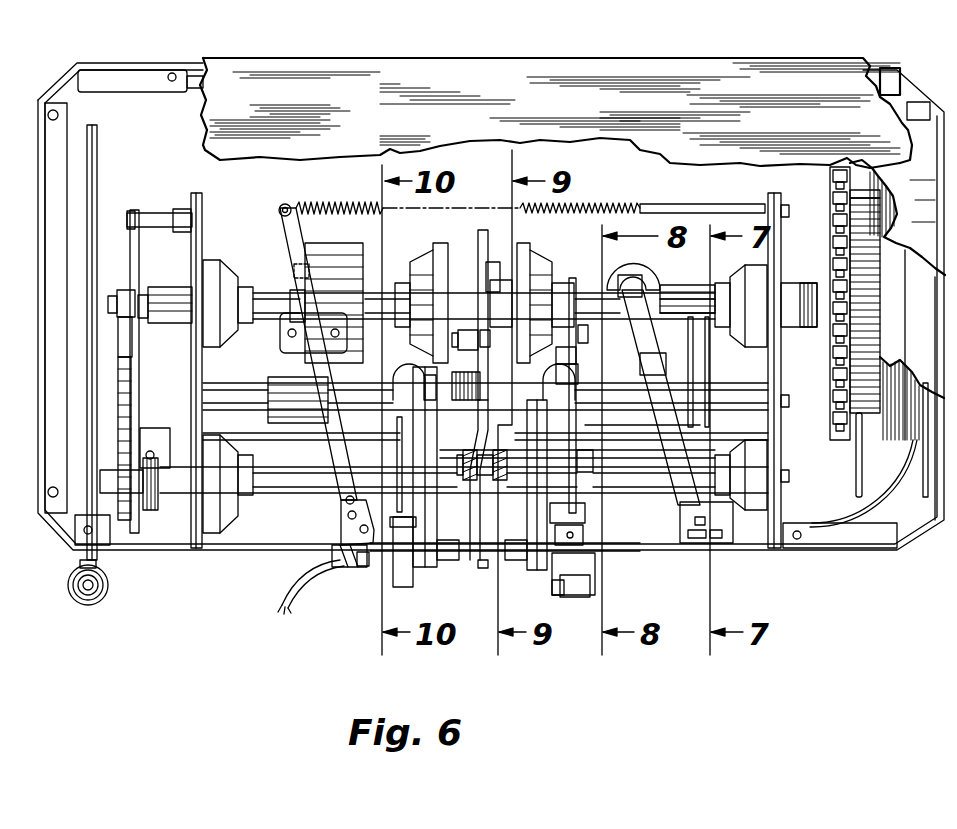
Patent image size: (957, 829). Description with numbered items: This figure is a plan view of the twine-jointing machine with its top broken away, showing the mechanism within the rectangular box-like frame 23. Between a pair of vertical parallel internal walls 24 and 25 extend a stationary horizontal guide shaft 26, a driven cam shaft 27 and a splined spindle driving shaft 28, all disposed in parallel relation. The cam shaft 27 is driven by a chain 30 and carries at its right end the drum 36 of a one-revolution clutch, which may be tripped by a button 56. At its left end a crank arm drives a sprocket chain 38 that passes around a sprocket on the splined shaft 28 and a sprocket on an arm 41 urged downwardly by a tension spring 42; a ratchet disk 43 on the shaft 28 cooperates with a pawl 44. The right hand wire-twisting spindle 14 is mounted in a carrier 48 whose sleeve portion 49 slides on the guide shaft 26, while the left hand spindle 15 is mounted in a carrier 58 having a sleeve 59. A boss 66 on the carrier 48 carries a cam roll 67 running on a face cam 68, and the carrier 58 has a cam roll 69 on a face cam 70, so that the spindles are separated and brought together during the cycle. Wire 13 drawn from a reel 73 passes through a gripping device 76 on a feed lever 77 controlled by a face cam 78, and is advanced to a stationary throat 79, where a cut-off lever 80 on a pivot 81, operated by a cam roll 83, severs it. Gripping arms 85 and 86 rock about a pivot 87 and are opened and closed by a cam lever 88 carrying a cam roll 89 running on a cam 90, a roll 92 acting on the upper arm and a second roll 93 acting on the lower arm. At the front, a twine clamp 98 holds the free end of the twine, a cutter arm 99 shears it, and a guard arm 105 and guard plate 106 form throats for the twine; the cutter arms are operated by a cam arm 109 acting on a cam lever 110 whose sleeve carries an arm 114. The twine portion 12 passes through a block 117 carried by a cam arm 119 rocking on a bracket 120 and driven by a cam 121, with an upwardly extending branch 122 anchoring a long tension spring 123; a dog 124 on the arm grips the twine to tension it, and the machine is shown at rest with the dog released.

The portion of the twine 12 is at (278, 598).
The wire 13 is at (872, 516).
The right hand wire-twisting spindle 14 is at (513, 565).
The left hand wire-twisting spindle 15 is at (452, 542).
The frame 23 is at (62, 545).
The internal wall 24 is at (781, 237).
The internal wall 25 is at (203, 197).
The guide shaft 26 is at (232, 393).
The cam shaft 27 is at (268, 294).
The splined spindle driving shaft 28 is at (285, 478).
The chain 30 is at (843, 441).
The drum 36 is at (876, 298).
The sprocket chain 38 is at (132, 390).
The arm 41 is at (140, 268).
The tension spring 42 is at (132, 350).
The ratchet disk 43 is at (150, 512).
The pawl 44 is at (155, 430).
The carrier 48 is at (538, 572).
The sleeve portion 49 is at (625, 430).
The button 56 is at (108, 585).
The carrier 58 is at (428, 570).
The sleeve 59 is at (305, 423).
The boss 66 is at (578, 375).
The cam roll 67 is at (576, 357).
The face cam 68 is at (526, 265).
The cam roll 69 is at (410, 352).
The face cam 70 is at (437, 268).
The reel 73 is at (862, 485).
The gripping device 76 is at (682, 528).
The feed lever 77 is at (672, 448).
The face cam 78 is at (652, 263).
The stationary throat 79 is at (586, 535).
The cut-off lever 80 is at (575, 283).
The pivot 81 is at (594, 461).
The cam roll 83 is at (584, 343).
The upper gripping arm 85 is at (482, 567).
The lower gripping arm 86 is at (478, 432).
The pivot 87 is at (466, 454).
The cam lever 88 is at (453, 386).
The cam roll 89 is at (492, 274).
The cam 90 is at (482, 248).
The roll 92 is at (490, 347).
The second roll 93 is at (500, 410).
The twine clamp 98 is at (580, 598).
The cutter arm 99 is at (586, 572).
The guard arm 105 is at (560, 597).
The guard plate 106 is at (408, 588).
The cam arm 109 is at (670, 287).
The cam lever 110 is at (706, 360).
The arm 114 is at (397, 452).
The block 117 is at (347, 567).
The cam arm 119 is at (346, 502).
The bracket 120 is at (285, 356).
The cam 121 is at (343, 239).
The branch 122 is at (288, 235).
The tension spring 123 is at (343, 205).
The dog 124 is at (341, 530).